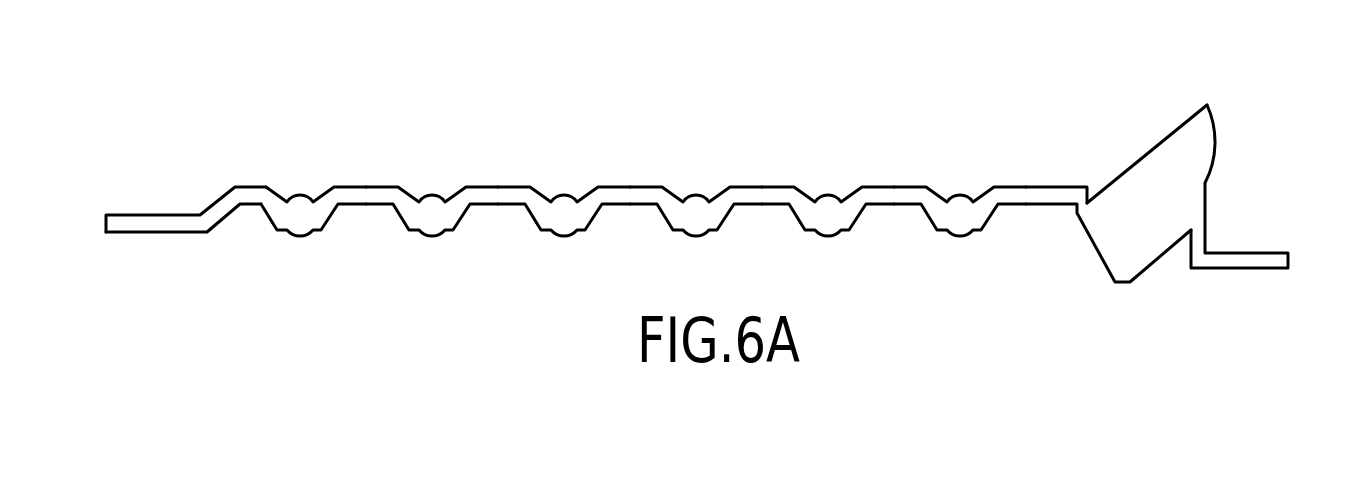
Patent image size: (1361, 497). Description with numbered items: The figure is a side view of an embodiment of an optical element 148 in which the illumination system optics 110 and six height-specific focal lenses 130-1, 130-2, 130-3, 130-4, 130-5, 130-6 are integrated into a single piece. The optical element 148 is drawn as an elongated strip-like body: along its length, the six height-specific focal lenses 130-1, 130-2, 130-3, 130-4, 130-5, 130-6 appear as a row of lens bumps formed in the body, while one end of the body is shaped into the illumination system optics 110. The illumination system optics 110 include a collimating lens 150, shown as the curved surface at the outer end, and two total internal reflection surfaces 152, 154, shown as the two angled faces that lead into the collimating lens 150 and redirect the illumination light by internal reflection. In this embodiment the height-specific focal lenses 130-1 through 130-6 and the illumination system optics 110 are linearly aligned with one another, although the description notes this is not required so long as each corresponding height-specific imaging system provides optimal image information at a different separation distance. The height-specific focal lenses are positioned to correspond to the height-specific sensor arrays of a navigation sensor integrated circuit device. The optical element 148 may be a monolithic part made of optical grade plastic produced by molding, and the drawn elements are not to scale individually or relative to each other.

The optical element 148 is at (135, 76).
The illumination system optics 110 is at (1096, 127).
The height-specific focal lens 130-1 is at (960, 192).
The height-specific focal lens 130-2 is at (828, 192).
The height-specific focal lens 130-3 is at (696, 192).
The height-specific focal lens 130-4 is at (564, 192).
The height-specific focal lens 130-5 is at (432, 192).
The height-specific focal lens 130-6 is at (300, 192).
The collimating lens 150 is at (1215, 138).
The total internal reflection surface 152 is at (1133, 182).
The total internal reflection surface 154 is at (1156, 243).